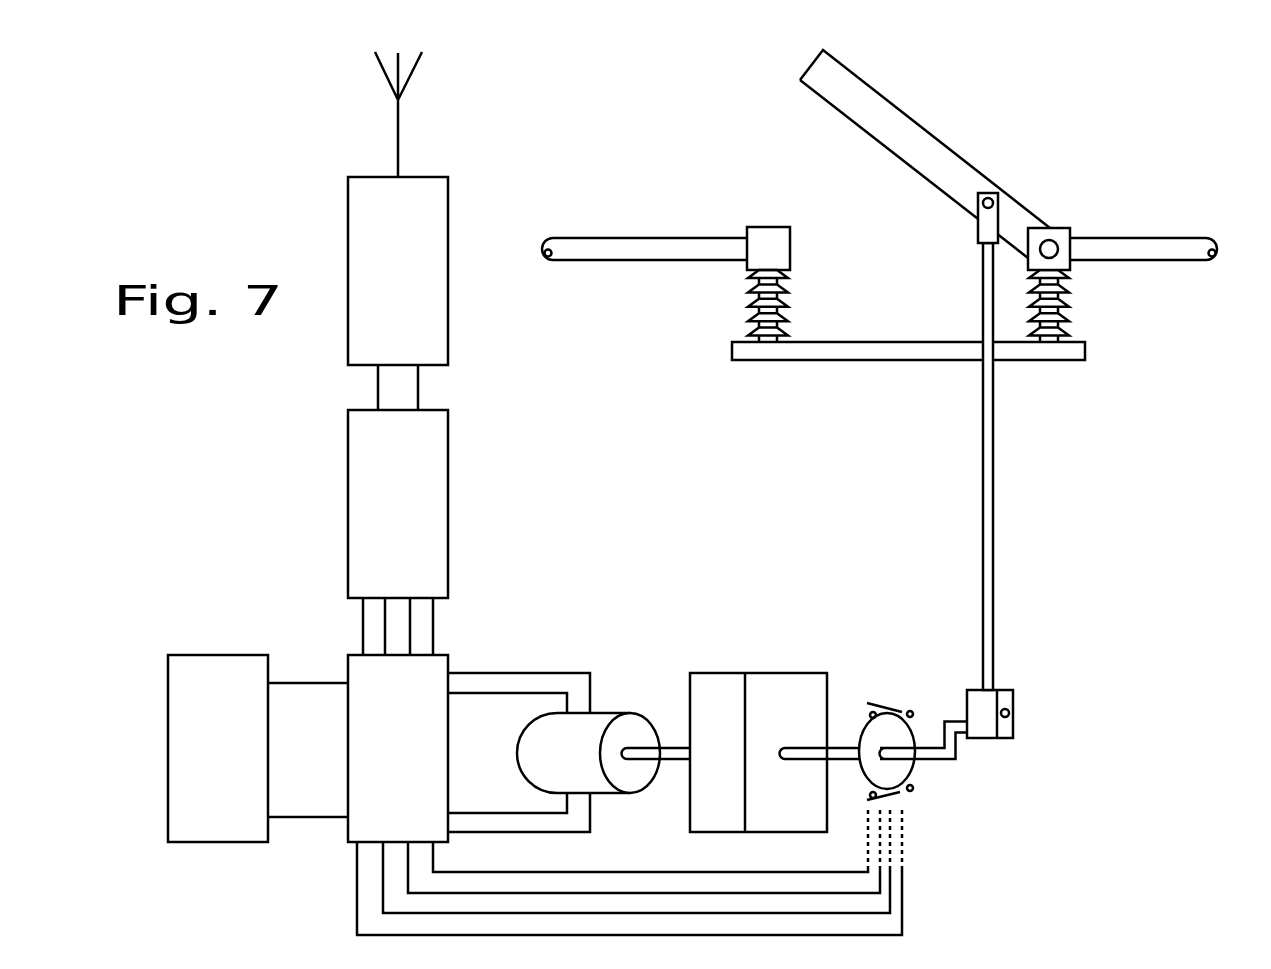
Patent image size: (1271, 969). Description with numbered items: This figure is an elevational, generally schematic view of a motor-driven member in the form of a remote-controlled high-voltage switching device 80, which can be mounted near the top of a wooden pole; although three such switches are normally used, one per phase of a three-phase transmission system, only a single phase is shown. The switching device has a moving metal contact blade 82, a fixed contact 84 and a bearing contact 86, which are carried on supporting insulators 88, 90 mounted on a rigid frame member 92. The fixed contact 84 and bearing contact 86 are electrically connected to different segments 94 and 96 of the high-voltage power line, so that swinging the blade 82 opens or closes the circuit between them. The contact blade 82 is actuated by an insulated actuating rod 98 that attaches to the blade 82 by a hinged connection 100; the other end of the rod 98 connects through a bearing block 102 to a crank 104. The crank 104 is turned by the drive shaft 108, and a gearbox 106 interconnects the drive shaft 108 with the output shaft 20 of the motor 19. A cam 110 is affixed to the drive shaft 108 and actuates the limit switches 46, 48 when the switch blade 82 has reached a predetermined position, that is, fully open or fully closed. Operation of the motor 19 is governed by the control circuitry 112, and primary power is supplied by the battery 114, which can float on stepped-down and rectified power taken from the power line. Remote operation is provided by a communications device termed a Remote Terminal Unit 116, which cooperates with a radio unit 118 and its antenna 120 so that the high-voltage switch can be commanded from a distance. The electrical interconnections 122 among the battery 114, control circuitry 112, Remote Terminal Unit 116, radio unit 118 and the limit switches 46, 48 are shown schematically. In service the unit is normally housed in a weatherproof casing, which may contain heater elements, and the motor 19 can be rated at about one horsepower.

The motor 19 is at (588, 753).
The output shaft 20 is at (683, 763).
The limit switch 46 is at (903, 803).
The limit switch 48 is at (907, 707).
The remote-controlled high-voltage switching device 80 is at (879, 370).
The moving metal contact blade 82 is at (957, 150).
The fixed contact 84 is at (770, 225).
The bearing contact 86 is at (1073, 232).
The supporting insulator 88 is at (1073, 315).
The supporting insulator 90 is at (752, 313).
The rigid frame member 92 is at (888, 342).
The power line segment 94 is at (645, 235).
The power line segment 96 is at (1197, 238).
The insulated actuating rod 98 is at (995, 442).
The hinged connection 100 is at (1002, 187).
The bearing block 102 is at (1015, 692).
The crank 104 is at (965, 743).
The gearbox 106 is at (775, 672).
The drive shaft 108 is at (919, 743).
The cam 110 is at (858, 768).
The control circuitry 112 is at (452, 662).
The battery 114 is at (195, 653).
The Remote Terminal Unit 116 is at (448, 517).
The radio unit 118 is at (448, 315).
The antenna 120 is at (405, 87).
The electrical interconnections 122 is at (398, 165).